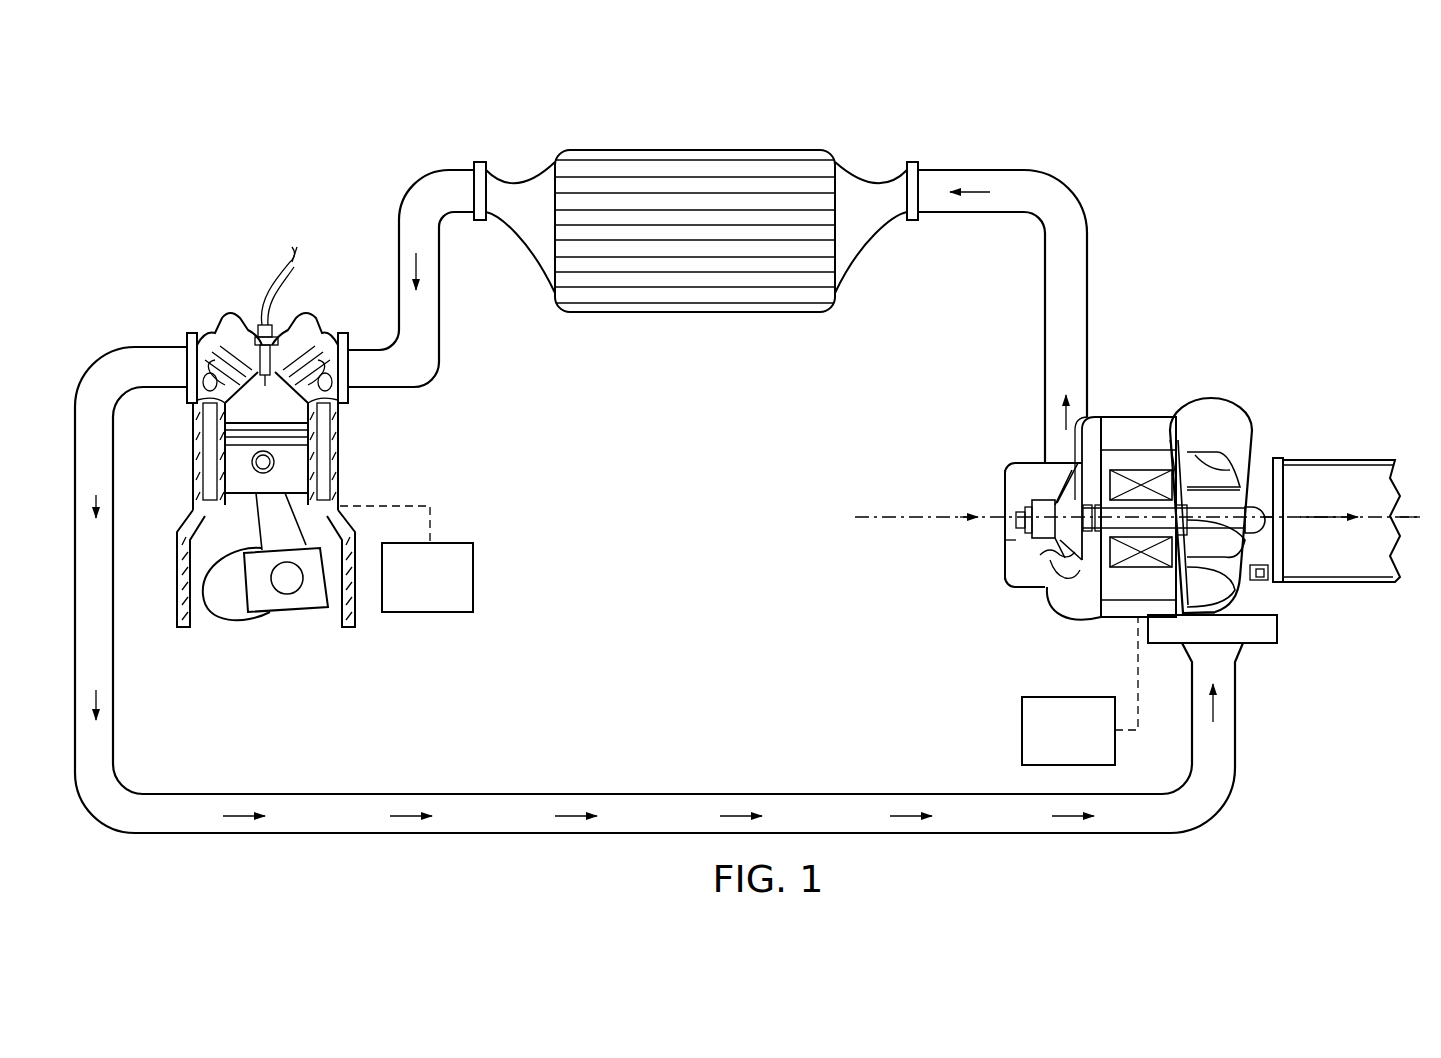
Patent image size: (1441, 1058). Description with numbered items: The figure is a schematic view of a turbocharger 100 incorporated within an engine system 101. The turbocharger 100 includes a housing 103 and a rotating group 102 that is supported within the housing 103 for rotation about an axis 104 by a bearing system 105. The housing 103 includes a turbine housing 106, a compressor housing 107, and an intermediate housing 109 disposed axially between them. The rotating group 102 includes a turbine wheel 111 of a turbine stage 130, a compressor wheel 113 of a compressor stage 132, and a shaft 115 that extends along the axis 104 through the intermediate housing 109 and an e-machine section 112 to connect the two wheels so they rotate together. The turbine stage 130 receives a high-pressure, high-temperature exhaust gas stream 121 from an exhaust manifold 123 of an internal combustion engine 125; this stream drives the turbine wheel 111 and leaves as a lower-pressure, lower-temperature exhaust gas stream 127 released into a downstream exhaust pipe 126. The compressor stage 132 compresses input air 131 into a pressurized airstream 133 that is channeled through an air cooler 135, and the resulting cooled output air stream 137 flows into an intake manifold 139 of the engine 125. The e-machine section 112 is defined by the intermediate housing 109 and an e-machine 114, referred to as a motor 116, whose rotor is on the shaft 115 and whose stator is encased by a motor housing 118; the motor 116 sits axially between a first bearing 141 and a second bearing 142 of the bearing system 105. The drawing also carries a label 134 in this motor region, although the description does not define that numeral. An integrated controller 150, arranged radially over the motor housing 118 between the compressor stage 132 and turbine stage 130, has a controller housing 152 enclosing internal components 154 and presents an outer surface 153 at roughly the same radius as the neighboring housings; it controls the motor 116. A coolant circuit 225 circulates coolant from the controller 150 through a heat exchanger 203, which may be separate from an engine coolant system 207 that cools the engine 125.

The turbocharger 100 is at (1213, 335).
The engine system 101 is at (240, 190).
The rotating group 102 is at (1115, 530).
The housing 103 is at (1198, 392).
The axis 104 is at (1408, 518).
The bearing system 105 is at (1092, 492).
The turbine housing 106 is at (1247, 447).
The compressor housing 107 is at (1025, 590).
The intermediate housing 109 is at (1105, 618).
The turbine wheel 111 is at (1250, 498).
The e-machine section 112 is at (1113, 410).
The compressor wheel 113 is at (1045, 560).
The e-machine 114 is at (1148, 575).
The shaft 115 is at (1170, 478).
The motor 116 is at (1172, 548).
The motor housing 118 is at (1135, 570).
The exhaust gas stream 121 is at (740, 815).
The exhaust manifold 123 is at (228, 403).
The internal combustion engine 125 is at (300, 474).
The exhaust pipe 126 is at (1340, 455).
The exhaust gas stream 127 is at (1330, 518).
The turbine stage 130 is at (1245, 402).
The input air 131 is at (945, 517).
The compressor stage 132 is at (996, 446).
The pressurized airstream 133 is at (1063, 413).
The motor section 134 is at (1160, 325).
The air cooler 135 is at (685, 178).
The output air stream 137 is at (410, 270).
The intake manifold 139 is at (335, 385).
The first bearing 141 is at (1248, 498).
The second bearing 142 is at (1092, 508).
The integrated controller 150 is at (1140, 410).
The controller housing 152 is at (1160, 417).
The outer surface 153 is at (1100, 620).
The internal components 154 is at (1105, 427).
The heat exchanger 203 is at (1022, 732).
The engine coolant system 207 is at (445, 508).
The coolant circuit 225 is at (1138, 712).